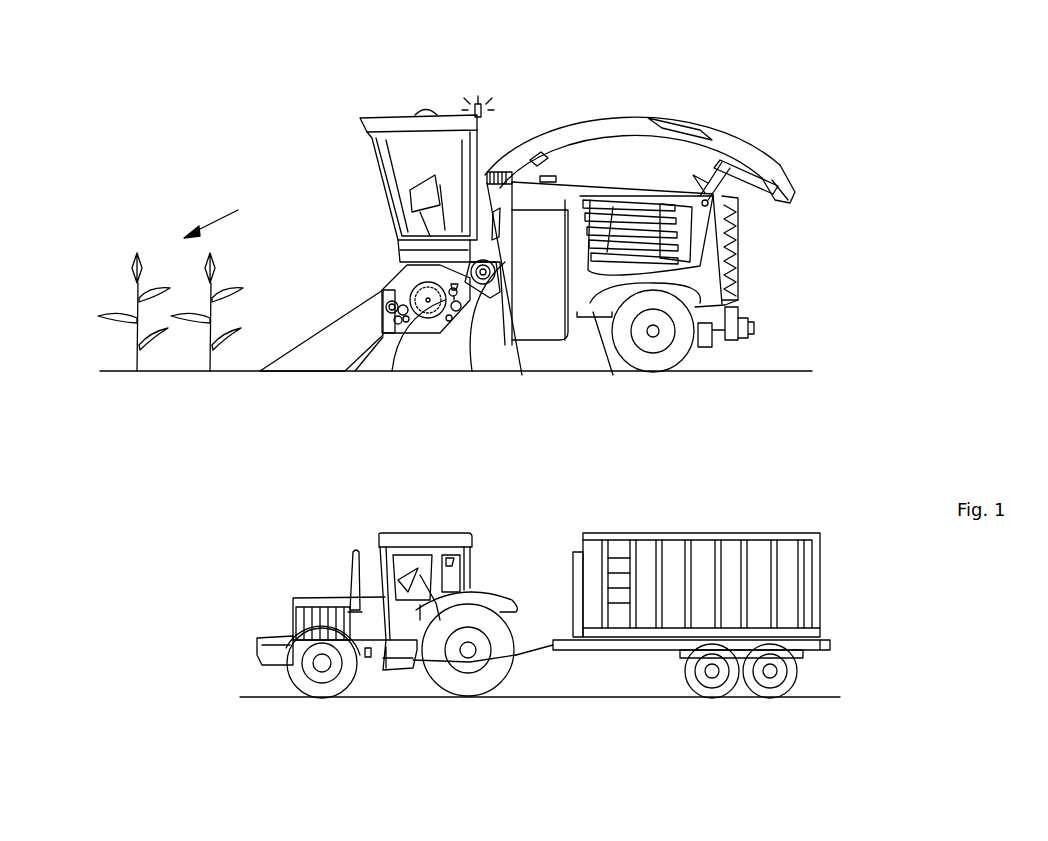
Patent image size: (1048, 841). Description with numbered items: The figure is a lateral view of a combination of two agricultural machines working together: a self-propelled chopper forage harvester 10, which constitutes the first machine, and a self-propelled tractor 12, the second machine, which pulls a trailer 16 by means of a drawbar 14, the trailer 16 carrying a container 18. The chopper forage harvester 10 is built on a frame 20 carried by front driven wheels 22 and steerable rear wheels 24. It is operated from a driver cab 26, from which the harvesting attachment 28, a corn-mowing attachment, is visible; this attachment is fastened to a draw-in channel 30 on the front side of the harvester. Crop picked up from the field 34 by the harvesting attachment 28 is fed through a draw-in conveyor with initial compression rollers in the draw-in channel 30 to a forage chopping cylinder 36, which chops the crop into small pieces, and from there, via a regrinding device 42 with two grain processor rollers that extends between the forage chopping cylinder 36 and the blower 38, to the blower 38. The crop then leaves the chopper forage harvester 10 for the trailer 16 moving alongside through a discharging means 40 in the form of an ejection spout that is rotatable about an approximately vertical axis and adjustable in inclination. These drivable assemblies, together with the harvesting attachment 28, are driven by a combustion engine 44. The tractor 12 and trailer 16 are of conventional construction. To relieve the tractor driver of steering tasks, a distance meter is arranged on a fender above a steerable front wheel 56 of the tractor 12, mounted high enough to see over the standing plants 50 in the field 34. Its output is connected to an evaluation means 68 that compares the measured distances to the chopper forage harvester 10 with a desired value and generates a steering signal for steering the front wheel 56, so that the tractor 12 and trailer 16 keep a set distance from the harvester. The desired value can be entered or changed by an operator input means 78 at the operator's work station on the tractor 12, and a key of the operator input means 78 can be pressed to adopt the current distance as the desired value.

The chopper forage harvester 10 is at (596, 242).
The tractor 12 is at (392, 704).
The drawbar 14 is at (411, 633).
The trailer 16 is at (673, 632).
The container 18 is at (735, 555).
The frame 20 is at (593, 314).
The front driven wheels 22 is at (418, 360).
The steerable rear wheels 24 is at (653, 360).
The driver cab 26 is at (385, 162).
The harvesting attachment 28 is at (318, 342).
The draw-in channel 30 is at (357, 371).
The field 34 is at (92, 355).
The forage chopping cylinder 36 is at (433, 330).
The blower 38 is at (505, 290).
The discharging means 40 is at (626, 120).
The regrinding device 42 is at (468, 300).
The combustion engine 44 is at (693, 228).
The plants 50 is at (223, 219).
The steerable front wheel 56 is at (295, 685).
The evaluation means 68 is at (362, 690).
The operator input means 78 is at (403, 565).